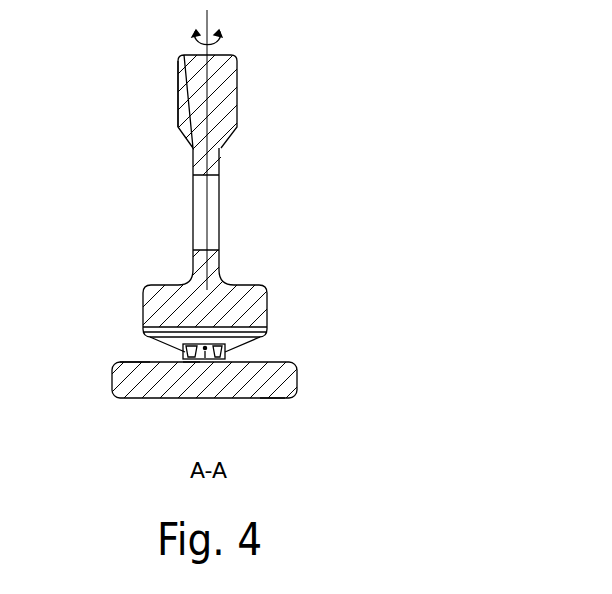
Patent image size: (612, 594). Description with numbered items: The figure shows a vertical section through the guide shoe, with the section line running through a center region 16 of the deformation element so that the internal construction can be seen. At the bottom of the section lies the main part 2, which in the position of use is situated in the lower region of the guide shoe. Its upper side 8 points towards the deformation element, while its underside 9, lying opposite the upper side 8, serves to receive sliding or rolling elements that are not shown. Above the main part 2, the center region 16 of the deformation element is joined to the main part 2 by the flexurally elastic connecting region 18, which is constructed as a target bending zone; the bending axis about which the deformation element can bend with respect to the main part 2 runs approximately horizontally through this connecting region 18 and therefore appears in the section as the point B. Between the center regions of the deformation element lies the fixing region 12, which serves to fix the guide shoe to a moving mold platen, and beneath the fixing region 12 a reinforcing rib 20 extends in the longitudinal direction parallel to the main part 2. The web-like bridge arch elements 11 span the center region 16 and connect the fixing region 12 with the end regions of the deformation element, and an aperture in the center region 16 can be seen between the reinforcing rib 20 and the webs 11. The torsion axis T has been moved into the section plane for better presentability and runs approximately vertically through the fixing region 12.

The torsion axis T is at (208, 14).
The webs 11 is at (222, 82).
The fixing region 12 is at (180, 75).
The center region 16 is at (220, 198).
The reinforcing rib 20 is at (255, 303).
The bending axis B is at (200, 359).
The connecting region 18 is at (270, 382).
The upper side 8 is at (133, 362).
The underside 9 is at (273, 398).
The main part 2 is at (189, 361).